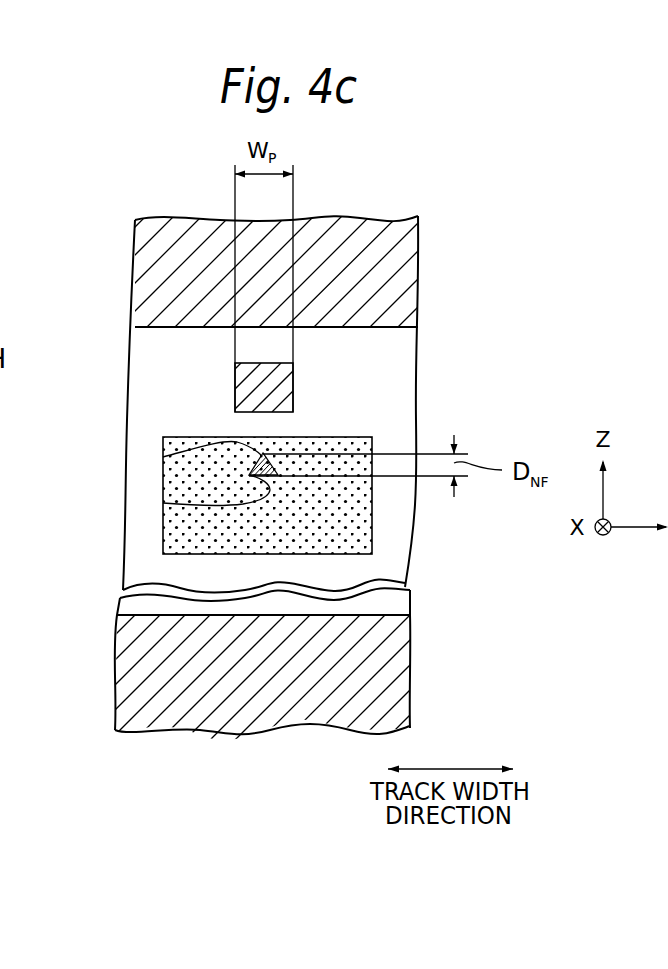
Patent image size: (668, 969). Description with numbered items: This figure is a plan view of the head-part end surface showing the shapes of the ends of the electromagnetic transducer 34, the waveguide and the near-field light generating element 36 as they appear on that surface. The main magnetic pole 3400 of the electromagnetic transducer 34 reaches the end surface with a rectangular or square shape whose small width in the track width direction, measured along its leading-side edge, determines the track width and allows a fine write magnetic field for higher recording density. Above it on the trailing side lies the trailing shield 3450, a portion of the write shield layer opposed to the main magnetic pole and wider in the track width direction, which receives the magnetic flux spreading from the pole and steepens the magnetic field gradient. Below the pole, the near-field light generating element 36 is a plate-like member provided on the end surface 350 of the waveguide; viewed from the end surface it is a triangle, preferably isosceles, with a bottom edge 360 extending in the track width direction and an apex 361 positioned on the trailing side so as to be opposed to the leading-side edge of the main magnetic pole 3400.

The electromagnetic transducer 34 is at (287, 288).
The trailing shield 3450 is at (373, 285).
The main magnetic pole 3400 is at (293, 382).
The end surface of the waveguide 350 is at (358, 519).
The near-field light generating element 36 is at (145, 479).
The bottom edge 360 is at (163, 503).
The apex 361 is at (163, 457).